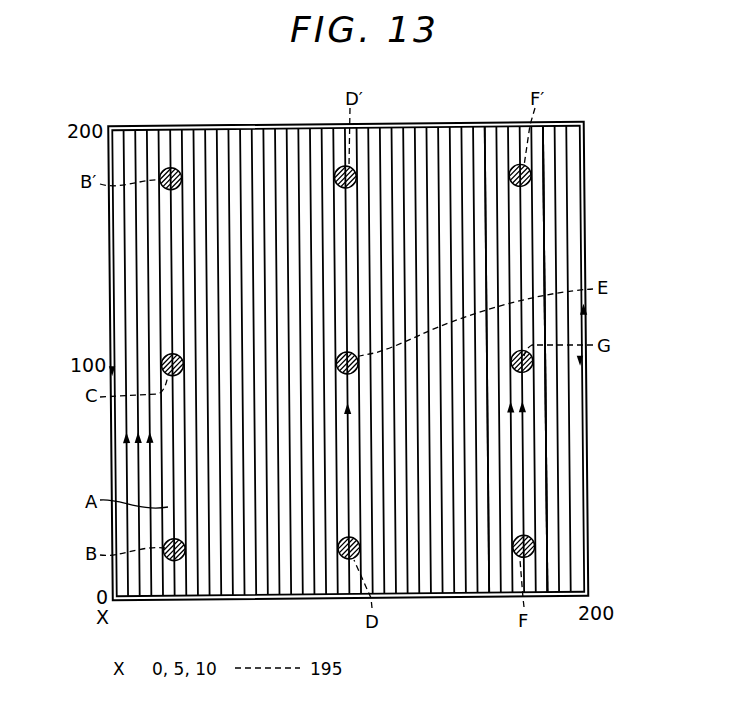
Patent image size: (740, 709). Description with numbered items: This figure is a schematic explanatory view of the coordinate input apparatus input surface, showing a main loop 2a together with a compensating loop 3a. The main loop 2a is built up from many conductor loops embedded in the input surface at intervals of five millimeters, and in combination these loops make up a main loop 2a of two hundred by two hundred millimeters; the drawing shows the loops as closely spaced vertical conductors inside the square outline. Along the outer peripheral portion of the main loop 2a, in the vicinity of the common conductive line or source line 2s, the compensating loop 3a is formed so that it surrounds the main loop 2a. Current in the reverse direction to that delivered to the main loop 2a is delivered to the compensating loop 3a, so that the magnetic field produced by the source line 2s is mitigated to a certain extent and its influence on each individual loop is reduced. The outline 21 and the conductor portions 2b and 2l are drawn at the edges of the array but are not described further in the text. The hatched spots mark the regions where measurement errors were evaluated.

The substrate outline 21 is at (154, 125).
The common conductive line (source line) 2s is at (233, 125).
The main loop 2a is at (482, 125).
The second stripe 2b is at (545, 487).
The last stripe 2l is at (545, 193).
The compensating loop 3a is at (111, 310).